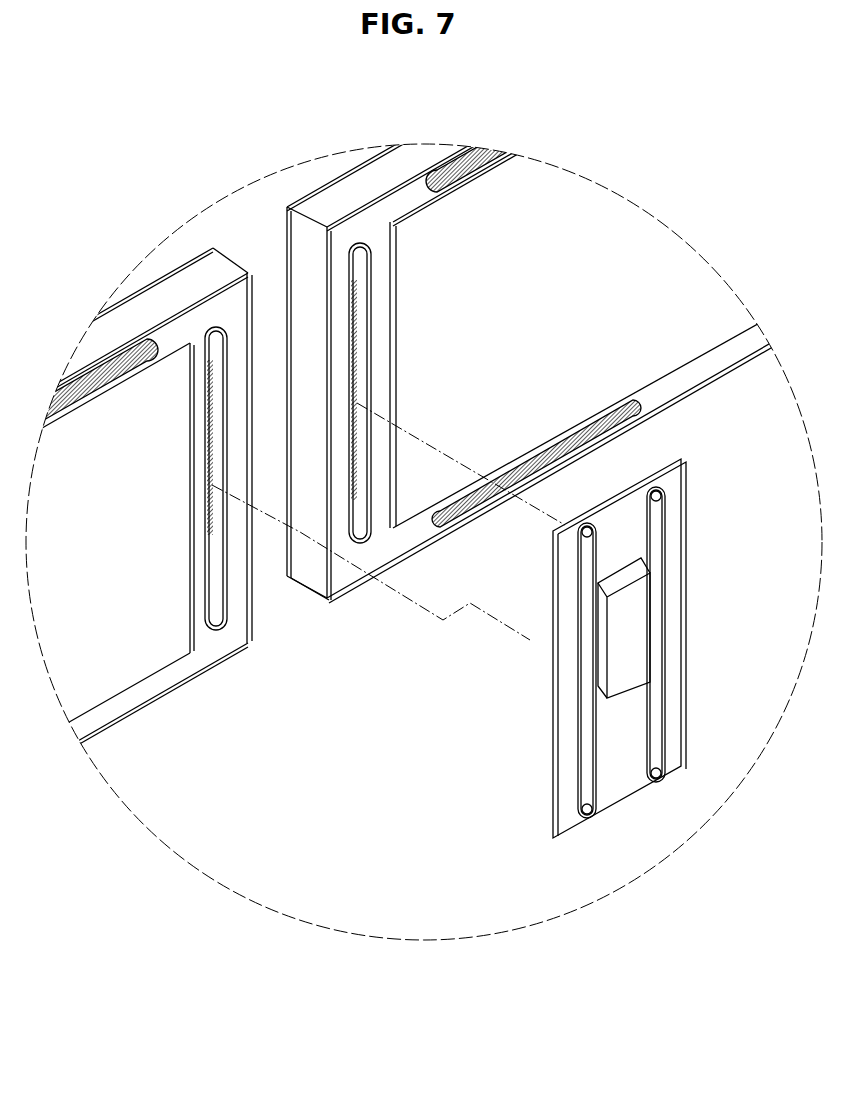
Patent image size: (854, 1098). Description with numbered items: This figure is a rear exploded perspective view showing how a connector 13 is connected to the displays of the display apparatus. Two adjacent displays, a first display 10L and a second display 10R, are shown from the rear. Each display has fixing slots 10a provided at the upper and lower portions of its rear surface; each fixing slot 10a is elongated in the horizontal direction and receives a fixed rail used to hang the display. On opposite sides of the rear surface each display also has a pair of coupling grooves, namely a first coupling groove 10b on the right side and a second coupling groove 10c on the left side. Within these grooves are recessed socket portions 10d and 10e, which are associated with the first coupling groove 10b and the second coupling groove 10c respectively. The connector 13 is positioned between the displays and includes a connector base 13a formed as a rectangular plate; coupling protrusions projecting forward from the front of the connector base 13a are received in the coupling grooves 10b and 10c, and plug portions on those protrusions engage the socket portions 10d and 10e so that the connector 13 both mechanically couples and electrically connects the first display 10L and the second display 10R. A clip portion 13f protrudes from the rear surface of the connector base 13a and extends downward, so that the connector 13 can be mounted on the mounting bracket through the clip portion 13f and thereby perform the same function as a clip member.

The first display 10L is at (302, 186).
The second display 10R is at (178, 258).
The fixing slot 10a is at (470, 180).
The first coupling groove 10b is at (372, 378).
The second coupling groove 10c is at (204, 467).
The socket portion 10d is at (353, 313).
The socket portion 10e is at (205, 396).
The connector 13 is at (697, 510).
The connector base 13a is at (680, 597).
The clip portion 13f is at (655, 645).